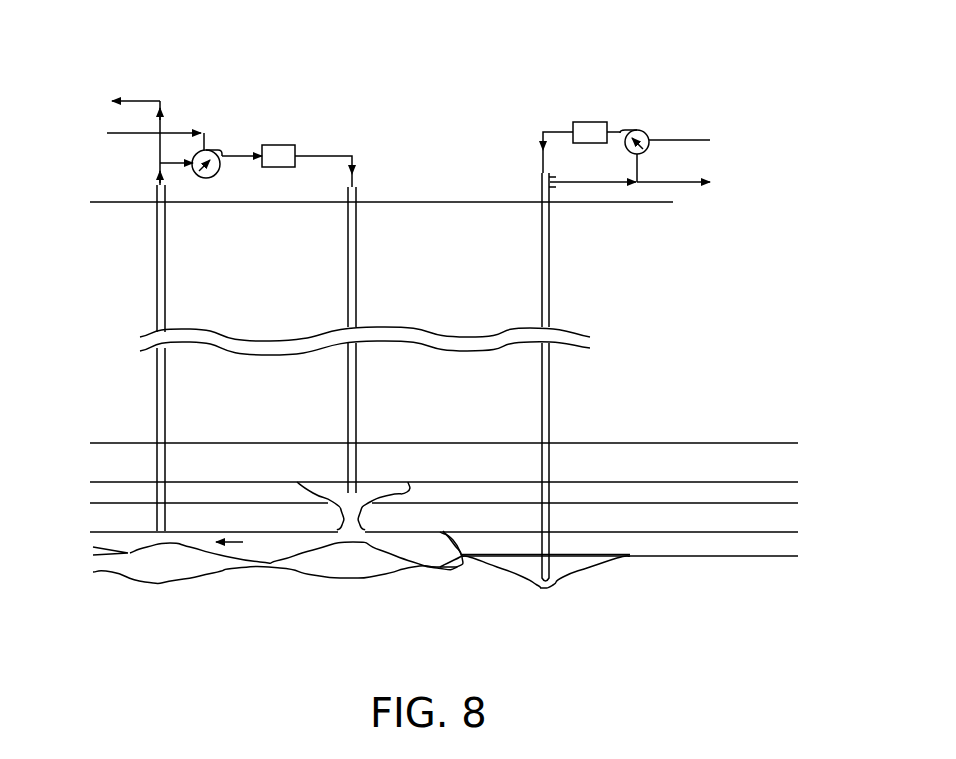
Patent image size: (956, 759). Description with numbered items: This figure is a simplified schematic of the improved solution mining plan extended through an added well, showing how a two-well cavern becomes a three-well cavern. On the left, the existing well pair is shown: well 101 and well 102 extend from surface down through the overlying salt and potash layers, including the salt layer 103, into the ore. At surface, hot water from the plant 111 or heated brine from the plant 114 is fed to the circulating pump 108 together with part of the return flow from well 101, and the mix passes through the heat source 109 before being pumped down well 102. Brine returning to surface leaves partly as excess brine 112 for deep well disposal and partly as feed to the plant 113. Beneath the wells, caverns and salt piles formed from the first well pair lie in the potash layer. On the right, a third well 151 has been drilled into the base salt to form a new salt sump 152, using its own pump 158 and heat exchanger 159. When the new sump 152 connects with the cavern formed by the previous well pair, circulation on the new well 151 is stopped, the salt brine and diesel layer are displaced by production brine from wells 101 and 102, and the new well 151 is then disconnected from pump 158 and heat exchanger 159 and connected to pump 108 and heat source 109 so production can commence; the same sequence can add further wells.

The well 101 is at (166, 262).
The well 102 is at (357, 262).
The salt layer 103 is at (737, 440).
The circulating pump 108 is at (212, 147).
The heat source 109 is at (278, 145).
The hot water from the plant 111 is at (692, 138).
The excess brine 112 is at (690, 183).
The feed to the plant 113 is at (128, 97).
The heated brine from the plant 114 is at (128, 137).
The third well 151 is at (550, 262).
The new salt sump 152 is at (563, 570).
The pump 158 is at (637, 128).
The heat exchanger 159 is at (590, 120).